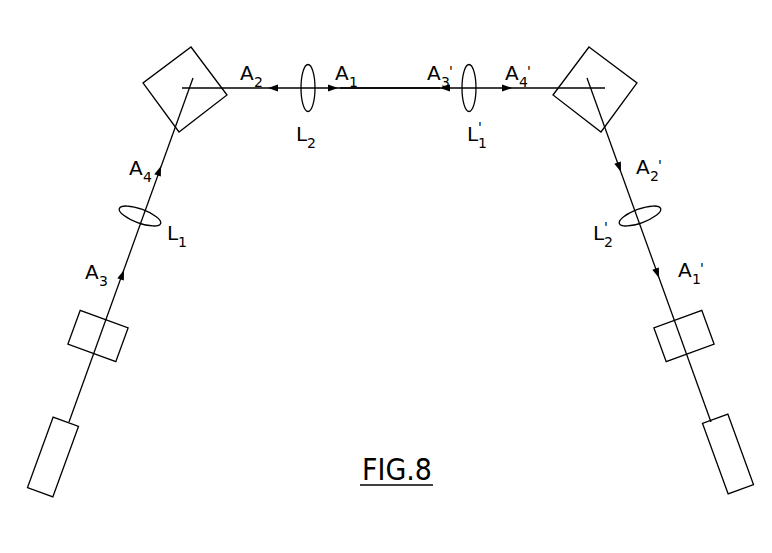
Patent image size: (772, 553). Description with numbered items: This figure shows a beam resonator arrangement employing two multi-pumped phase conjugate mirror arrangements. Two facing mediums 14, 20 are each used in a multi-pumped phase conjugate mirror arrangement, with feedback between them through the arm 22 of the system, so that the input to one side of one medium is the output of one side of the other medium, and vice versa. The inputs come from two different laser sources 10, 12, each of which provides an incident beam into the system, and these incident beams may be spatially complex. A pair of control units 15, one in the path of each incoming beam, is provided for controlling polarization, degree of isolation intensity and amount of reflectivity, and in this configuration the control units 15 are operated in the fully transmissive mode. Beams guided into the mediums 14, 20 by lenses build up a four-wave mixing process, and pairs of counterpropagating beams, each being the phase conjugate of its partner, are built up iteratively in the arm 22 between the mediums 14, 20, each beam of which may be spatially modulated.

The beam source 10 is at (705, 432).
The beam source 12 is at (73, 445).
The medium 14 is at (163, 66).
The control unit 15 is at (128, 337).
The medium 20 is at (623, 70).
The arm 22 is at (393, 87).